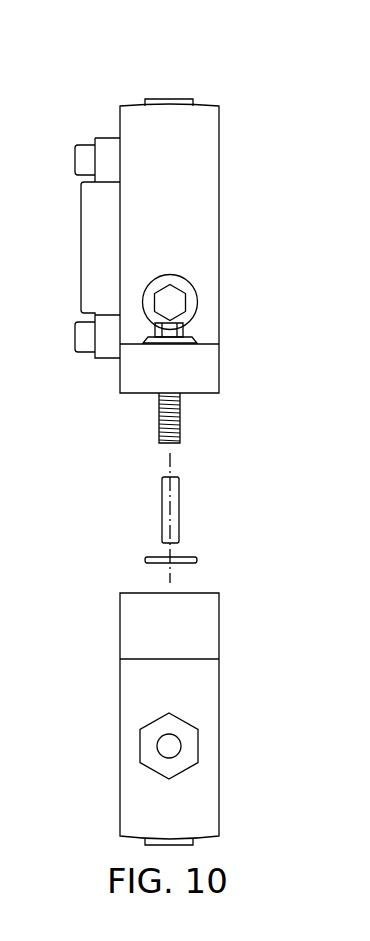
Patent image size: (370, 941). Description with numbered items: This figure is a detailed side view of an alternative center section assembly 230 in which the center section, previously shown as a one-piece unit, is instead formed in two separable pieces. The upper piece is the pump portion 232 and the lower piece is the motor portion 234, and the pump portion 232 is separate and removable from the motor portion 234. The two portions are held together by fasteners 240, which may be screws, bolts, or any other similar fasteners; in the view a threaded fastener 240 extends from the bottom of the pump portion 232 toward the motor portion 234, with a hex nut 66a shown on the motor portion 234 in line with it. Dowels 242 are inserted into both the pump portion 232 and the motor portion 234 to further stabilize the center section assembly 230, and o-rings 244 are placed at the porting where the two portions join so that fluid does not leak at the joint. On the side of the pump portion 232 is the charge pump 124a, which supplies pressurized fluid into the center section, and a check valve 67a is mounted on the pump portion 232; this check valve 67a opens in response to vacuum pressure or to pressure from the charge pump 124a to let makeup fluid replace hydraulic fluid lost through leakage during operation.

The center section assembly 230 is at (100, 63).
The pump portion 232 is at (189, 231).
The charge pump 124a is at (81, 248).
The check valve 67a is at (187, 281).
The fasteners 240 is at (188, 331).
The dowels 242 is at (162, 510).
The o-rings 244 is at (145, 560).
The motor portion 234 is at (190, 701).
The hex nut 66a is at (199, 746).